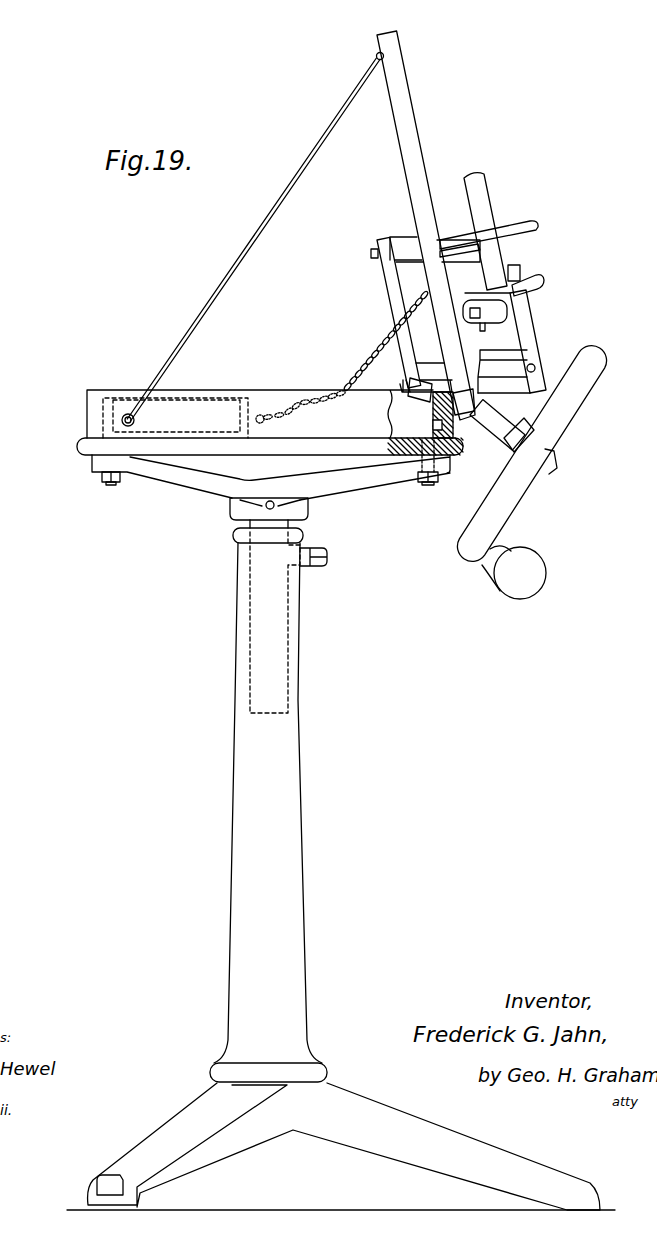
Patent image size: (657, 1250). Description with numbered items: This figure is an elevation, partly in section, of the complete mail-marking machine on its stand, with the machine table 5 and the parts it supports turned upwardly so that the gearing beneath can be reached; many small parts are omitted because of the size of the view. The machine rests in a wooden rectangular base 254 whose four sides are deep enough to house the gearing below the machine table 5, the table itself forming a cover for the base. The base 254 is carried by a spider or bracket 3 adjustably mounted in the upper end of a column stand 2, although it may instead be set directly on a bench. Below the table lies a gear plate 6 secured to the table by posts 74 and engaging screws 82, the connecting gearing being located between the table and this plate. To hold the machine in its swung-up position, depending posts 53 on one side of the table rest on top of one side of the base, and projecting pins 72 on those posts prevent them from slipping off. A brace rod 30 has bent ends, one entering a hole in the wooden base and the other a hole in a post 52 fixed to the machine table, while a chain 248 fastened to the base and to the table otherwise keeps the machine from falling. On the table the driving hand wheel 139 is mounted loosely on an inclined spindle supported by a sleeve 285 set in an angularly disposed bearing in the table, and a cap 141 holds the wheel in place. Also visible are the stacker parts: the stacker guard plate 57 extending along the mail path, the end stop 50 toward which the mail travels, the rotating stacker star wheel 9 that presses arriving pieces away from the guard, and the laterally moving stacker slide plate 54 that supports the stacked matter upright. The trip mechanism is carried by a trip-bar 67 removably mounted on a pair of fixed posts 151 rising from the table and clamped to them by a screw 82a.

The column stand 2 is at (304, 772).
The spider or bracket 3 is at (204, 487).
The machine table 5 is at (412, 120).
The gear plate 6 is at (388, 292).
The stacker star wheel 9 is at (512, 268).
The brace rod 30 is at (253, 238).
The end stop 50 is at (487, 197).
The post 52 is at (375, 56).
The depending posts 53 is at (404, 386).
The stacker slide plate 54 is at (531, 229).
The stacker guard plate 57 is at (542, 284).
The trip-bar 67 is at (533, 330).
The projecting pins 72 is at (424, 402).
The posts 74 is at (403, 242).
The engaging screws 82 is at (371, 255).
The screw 82a is at (534, 366).
The hand wheel 139 is at (566, 413).
The cap 141 is at (550, 471).
The fixed posts 151 is at (490, 356).
The chain 248 is at (369, 358).
The wooden rectangular base 254 is at (90, 418).
The sleeve 285 is at (497, 436).